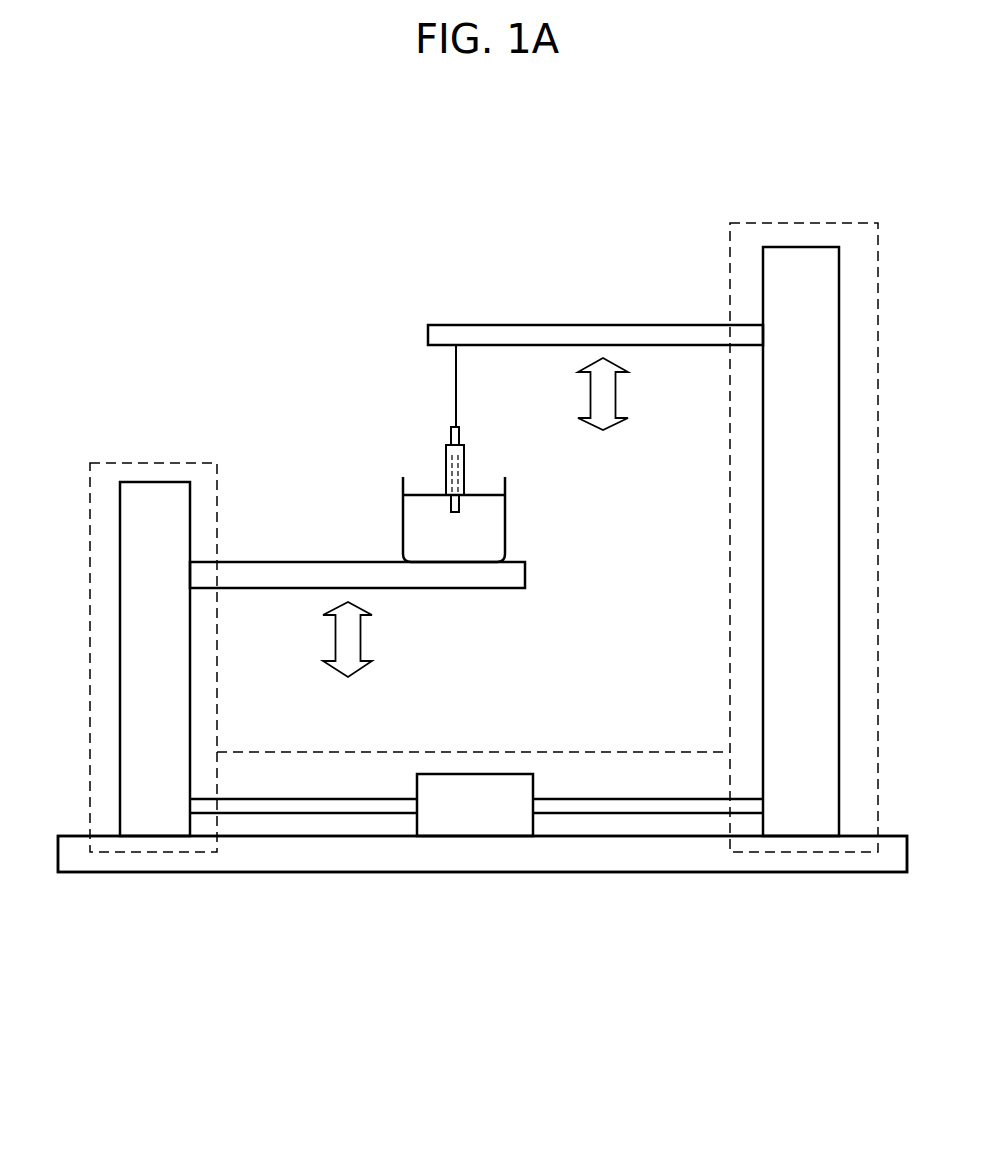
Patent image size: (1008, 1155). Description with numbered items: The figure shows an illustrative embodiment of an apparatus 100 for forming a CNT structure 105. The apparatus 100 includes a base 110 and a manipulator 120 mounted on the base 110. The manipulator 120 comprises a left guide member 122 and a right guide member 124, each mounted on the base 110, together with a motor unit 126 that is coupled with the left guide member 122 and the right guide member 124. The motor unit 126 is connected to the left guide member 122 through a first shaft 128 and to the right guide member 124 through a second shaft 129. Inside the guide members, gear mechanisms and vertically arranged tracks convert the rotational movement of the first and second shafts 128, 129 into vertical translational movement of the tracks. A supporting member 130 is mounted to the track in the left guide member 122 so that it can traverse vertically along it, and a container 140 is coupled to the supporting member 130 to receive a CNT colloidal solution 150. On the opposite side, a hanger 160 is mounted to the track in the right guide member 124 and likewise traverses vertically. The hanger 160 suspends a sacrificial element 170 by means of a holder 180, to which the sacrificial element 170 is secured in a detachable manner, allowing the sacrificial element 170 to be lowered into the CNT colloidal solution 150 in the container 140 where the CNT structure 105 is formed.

The apparatus 100 is at (255, 159).
The CNT structure 105 is at (464, 457).
The base 110 is at (493, 862).
The manipulator 120 is at (107, 463).
The left guide member 122 is at (173, 485).
The right guide member 124 is at (780, 253).
The motor unit 126 is at (510, 774).
The first shaft 128 is at (272, 805).
The second shaft 129 is at (657, 803).
The supporting member 130 is at (462, 578).
The container 140 is at (505, 482).
The CNT colloidal solution 150 is at (483, 528).
The hanger 160 is at (531, 330).
The sacrificial element 170 is at (451, 433).
The holder 180 is at (456, 370).